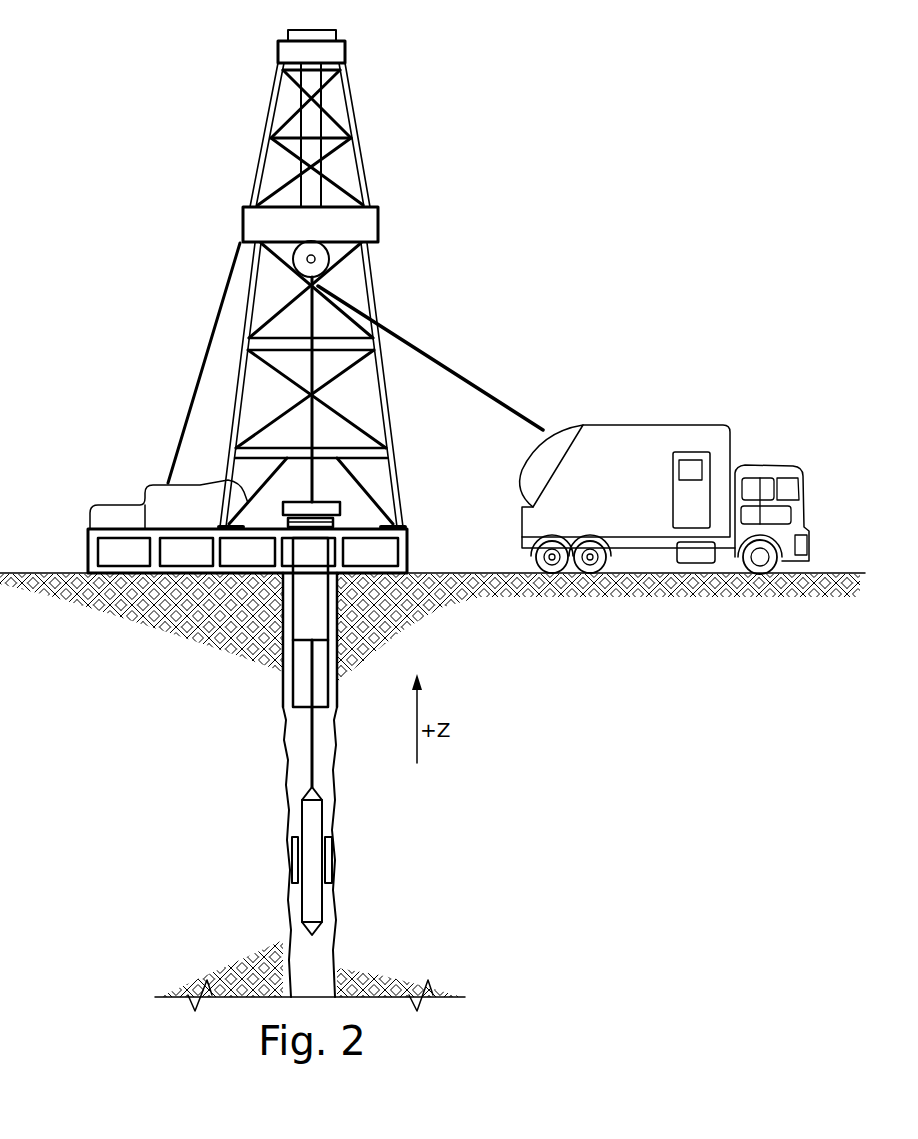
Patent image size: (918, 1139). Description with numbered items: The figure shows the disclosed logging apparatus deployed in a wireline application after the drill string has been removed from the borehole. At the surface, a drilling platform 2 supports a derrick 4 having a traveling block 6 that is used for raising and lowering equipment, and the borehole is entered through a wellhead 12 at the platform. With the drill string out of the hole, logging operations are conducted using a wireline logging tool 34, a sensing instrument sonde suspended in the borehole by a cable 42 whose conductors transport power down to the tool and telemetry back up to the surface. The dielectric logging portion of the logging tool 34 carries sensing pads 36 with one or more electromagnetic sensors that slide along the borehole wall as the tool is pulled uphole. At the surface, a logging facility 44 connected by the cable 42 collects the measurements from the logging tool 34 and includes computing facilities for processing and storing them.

The drilling platform 2 is at (88, 553).
The derrick 4 is at (400, 485).
The traveling block 6 is at (303, 270).
The wellhead 12 is at (297, 500).
The wireline logging tool 34 is at (300, 903).
The sensing pads 36 is at (288, 850).
The cable 42 is at (440, 362).
The logging facility 44 is at (690, 426).